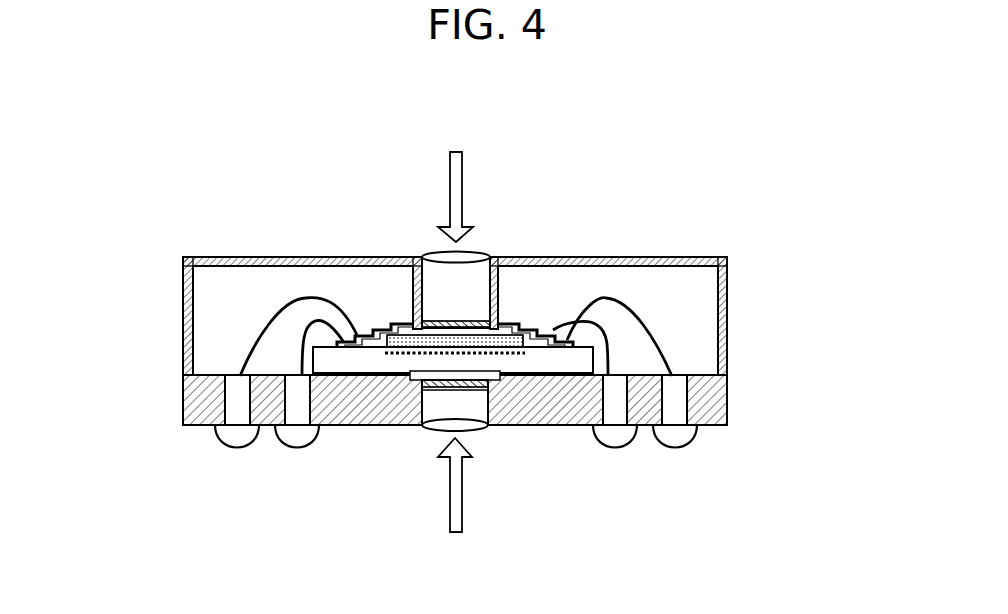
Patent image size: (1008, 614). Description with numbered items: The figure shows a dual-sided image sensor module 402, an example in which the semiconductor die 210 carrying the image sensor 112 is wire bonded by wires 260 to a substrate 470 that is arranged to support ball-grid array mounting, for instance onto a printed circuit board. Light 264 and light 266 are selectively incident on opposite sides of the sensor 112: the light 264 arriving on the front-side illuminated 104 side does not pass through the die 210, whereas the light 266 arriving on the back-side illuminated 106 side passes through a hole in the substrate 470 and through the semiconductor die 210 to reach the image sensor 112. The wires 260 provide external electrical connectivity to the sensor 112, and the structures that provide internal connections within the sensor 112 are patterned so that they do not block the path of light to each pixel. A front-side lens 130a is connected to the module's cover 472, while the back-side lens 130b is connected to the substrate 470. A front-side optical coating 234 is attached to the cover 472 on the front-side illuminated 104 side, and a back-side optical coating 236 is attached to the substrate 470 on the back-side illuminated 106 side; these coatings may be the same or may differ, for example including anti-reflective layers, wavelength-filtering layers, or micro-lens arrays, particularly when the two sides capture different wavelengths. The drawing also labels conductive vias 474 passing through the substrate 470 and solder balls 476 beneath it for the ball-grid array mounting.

The dual-sided image sensor module 402 is at (307, 148).
The front-side illuminated side 104 is at (698, 167).
The back-side illuminated side 106 is at (734, 567).
The semiconductor die 210 is at (333, 360).
The image sensor 112 is at (482, 340).
The front-side optical coating 234 is at (447, 321).
The back-side optical coating 236 is at (443, 388).
The front-side lens 130a is at (480, 253).
The back-side lens 130b is at (472, 425).
The light 264 is at (462, 172).
The light 266 is at (462, 515).
The wires 260 is at (663, 330).
The cover 472 is at (727, 292).
The substrate 470 is at (727, 398).
The conductive via 474 is at (225, 398).
The solder ball 476 is at (237, 447).